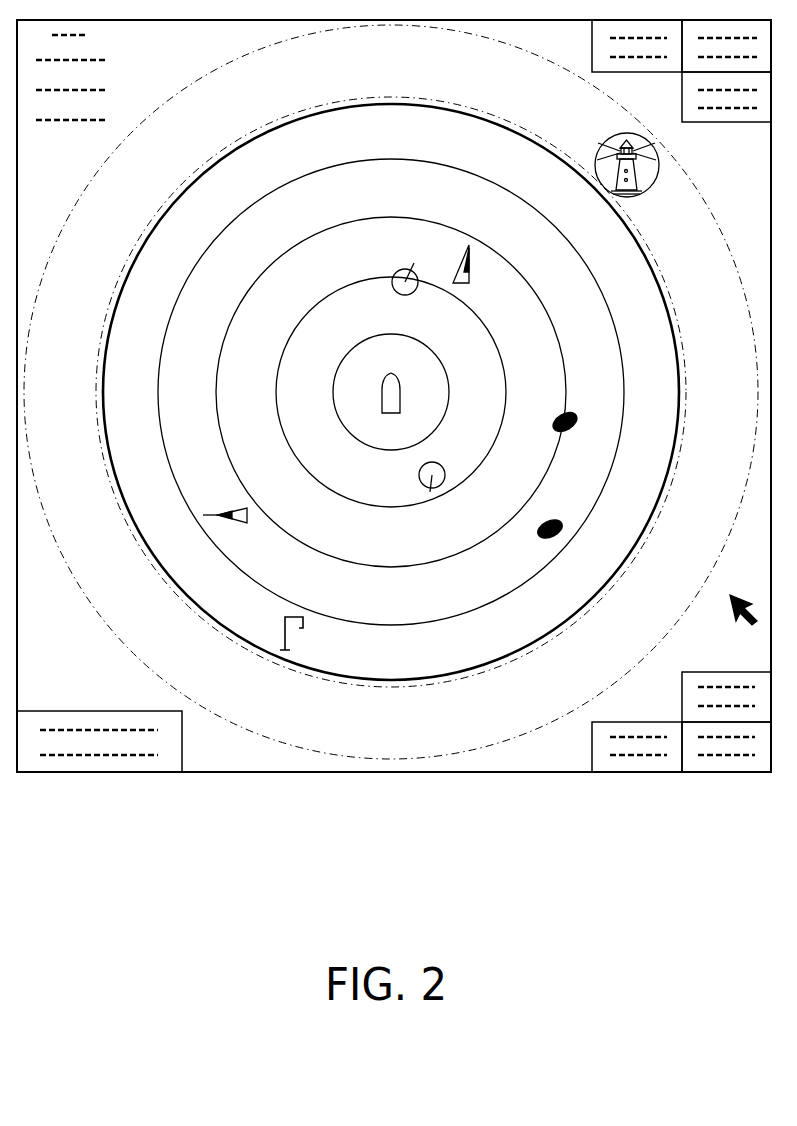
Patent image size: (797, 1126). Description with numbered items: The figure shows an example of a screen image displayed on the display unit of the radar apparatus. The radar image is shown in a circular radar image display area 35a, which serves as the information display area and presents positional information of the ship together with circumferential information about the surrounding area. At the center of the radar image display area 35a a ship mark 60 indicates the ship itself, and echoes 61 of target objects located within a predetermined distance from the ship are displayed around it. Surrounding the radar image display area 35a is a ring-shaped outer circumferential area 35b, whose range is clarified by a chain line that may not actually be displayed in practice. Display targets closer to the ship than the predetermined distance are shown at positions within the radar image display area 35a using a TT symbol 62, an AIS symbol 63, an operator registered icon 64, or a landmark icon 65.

The radar image display area 35a is at (401, 676).
The outer circumferential area 35b is at (462, 747).
The ship mark 60 is at (382, 395).
The echoes 61 is at (553, 419).
The TT symbol 62 is at (398, 271).
The AIS symbol 63 is at (469, 273).
The operator registered icon 64 is at (303, 625).
The landmark icon 65 is at (656, 186).